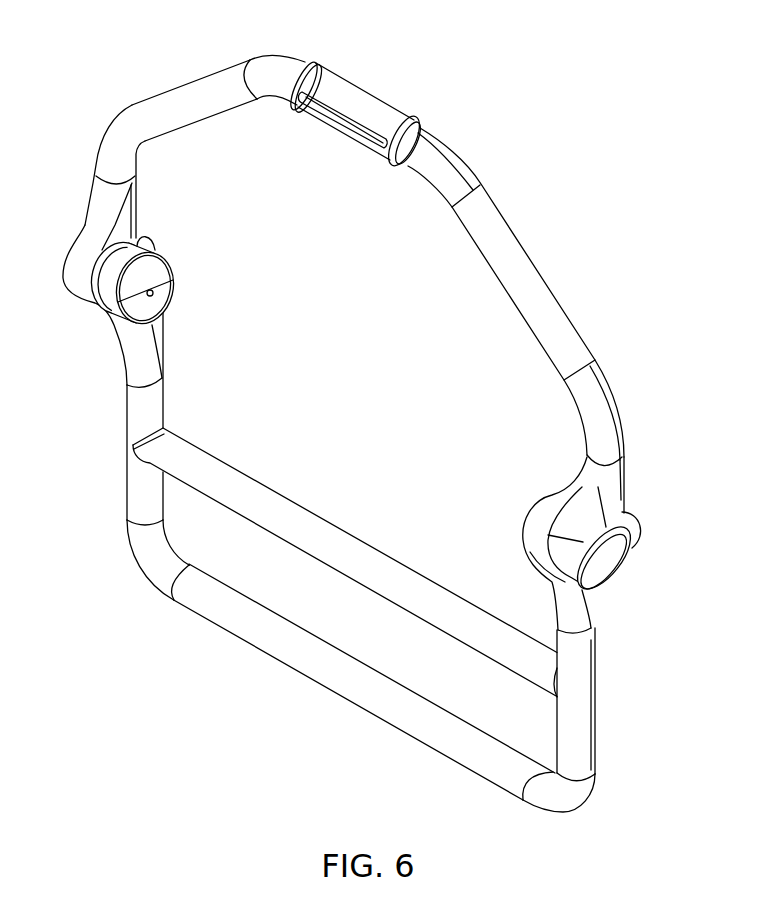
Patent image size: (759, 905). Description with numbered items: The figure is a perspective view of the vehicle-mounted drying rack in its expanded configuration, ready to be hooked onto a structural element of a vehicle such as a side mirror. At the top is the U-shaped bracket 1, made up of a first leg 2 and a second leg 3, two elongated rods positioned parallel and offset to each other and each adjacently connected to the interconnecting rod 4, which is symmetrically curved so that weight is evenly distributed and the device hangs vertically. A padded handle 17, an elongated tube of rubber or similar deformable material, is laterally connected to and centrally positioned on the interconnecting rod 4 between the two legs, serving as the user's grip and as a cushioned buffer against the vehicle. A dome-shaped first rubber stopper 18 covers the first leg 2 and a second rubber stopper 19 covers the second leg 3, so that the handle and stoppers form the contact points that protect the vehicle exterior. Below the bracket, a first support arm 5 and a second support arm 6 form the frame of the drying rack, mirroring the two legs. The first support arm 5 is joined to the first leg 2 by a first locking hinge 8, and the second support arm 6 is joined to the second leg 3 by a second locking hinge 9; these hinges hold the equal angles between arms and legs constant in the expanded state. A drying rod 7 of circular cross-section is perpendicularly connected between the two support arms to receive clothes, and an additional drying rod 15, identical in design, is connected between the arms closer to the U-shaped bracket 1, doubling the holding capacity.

The U-shaped bracket 1 is at (536, 178).
The first leg 2 is at (97, 218).
The second leg 3 is at (607, 477).
The interconnecting rod 4 is at (453, 167).
The first support arm 5 is at (127, 493).
The second support arm 6 is at (577, 750).
The drying rod 7 is at (313, 672).
The first locking hinge 8 is at (167, 317).
The second locking hinge 9 is at (627, 593).
The additional drying rod 15 is at (350, 567).
The padded handle 17 is at (338, 81).
The first rubber stopper 18 is at (157, 247).
The second rubber stopper 19 is at (637, 530).